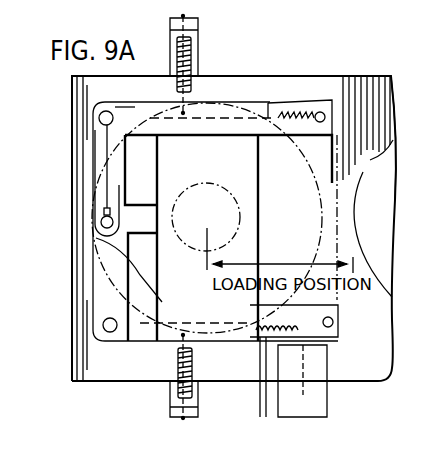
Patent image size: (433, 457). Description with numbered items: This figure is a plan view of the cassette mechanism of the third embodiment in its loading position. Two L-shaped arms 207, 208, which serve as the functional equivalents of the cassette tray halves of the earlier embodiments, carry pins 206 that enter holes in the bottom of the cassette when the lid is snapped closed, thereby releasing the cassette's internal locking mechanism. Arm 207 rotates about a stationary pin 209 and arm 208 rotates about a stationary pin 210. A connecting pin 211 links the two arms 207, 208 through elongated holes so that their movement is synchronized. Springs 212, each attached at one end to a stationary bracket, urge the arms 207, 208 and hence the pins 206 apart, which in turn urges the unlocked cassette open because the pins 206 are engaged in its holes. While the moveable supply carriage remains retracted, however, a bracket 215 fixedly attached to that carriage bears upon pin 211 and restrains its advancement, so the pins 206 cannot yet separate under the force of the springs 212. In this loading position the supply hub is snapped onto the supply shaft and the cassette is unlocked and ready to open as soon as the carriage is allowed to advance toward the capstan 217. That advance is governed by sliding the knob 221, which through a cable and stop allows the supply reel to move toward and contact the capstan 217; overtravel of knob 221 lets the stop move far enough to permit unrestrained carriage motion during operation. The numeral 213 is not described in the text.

The pins 206 is at (324, 114).
The L-shaped arm 207 is at (275, 102).
The L-shaped arm 208 is at (273, 332).
The stationary pin 209 is at (99, 118).
The stationary pin 210 is at (103, 326).
The pin 211 is at (101, 222).
The springs 212 is at (190, 60).
The screw housing 213 is at (197, 20).
The bracket 215 is at (128, 262).
The capstan 217 is at (380, 160).
The knob 221 is at (268, 410).